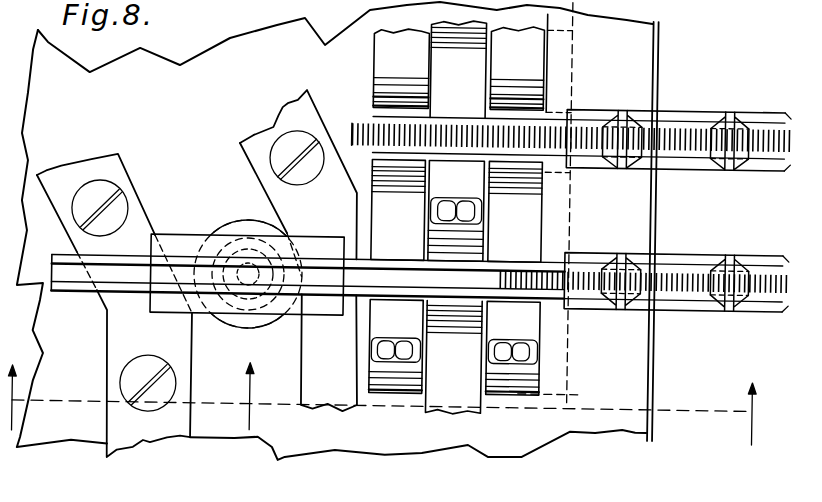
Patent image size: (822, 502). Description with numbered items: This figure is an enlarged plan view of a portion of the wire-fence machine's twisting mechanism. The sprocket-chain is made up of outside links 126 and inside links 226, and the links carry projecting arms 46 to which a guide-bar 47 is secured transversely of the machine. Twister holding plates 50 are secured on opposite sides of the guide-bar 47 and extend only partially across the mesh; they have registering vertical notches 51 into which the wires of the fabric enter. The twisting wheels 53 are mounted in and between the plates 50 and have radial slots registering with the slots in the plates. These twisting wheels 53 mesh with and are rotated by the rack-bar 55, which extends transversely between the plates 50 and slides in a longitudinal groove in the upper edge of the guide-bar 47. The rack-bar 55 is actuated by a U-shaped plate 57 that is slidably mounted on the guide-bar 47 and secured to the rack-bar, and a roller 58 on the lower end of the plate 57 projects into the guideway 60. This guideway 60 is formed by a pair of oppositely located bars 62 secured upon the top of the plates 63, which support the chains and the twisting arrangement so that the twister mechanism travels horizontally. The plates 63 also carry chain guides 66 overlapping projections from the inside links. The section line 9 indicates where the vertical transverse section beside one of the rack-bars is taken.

The section line 9— 9 is at (391, 401).
The projecting arms 46 is at (378, 323).
The guide-bars 47 is at (70, 296).
The twister holding plates 50 is at (757, 114).
The vertical notches 51 is at (632, 109).
The twisting wheels 53 is at (648, 133).
The rack-bars 55 is at (367, 128).
The U-shaped plates 57 is at (318, 314).
The roller 58 is at (237, 330).
The guideway 60 is at (333, 228).
The oppositely located bars 62 is at (110, 160).
The plates 63 is at (288, 462).
The chain guides 66 is at (635, 378).
The outside links 126 is at (388, 392).
The inside links 226 is at (447, 409).